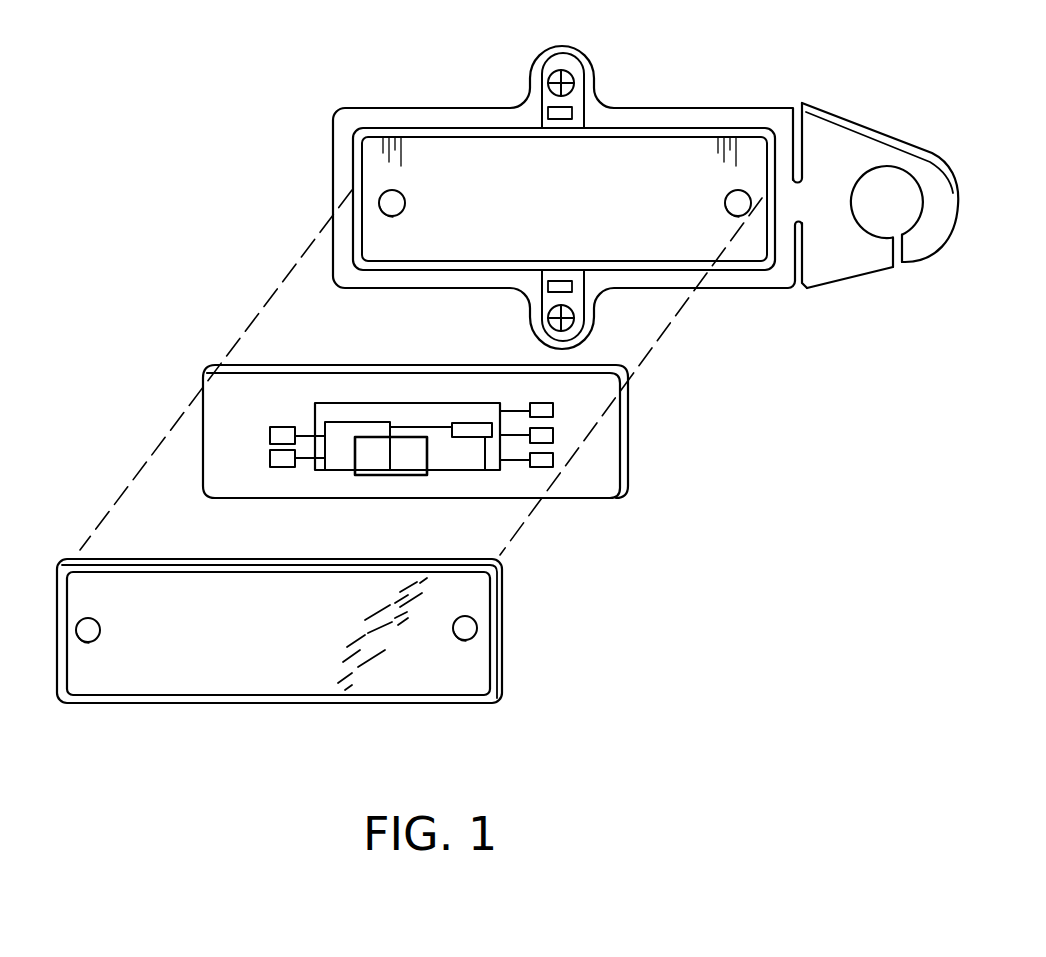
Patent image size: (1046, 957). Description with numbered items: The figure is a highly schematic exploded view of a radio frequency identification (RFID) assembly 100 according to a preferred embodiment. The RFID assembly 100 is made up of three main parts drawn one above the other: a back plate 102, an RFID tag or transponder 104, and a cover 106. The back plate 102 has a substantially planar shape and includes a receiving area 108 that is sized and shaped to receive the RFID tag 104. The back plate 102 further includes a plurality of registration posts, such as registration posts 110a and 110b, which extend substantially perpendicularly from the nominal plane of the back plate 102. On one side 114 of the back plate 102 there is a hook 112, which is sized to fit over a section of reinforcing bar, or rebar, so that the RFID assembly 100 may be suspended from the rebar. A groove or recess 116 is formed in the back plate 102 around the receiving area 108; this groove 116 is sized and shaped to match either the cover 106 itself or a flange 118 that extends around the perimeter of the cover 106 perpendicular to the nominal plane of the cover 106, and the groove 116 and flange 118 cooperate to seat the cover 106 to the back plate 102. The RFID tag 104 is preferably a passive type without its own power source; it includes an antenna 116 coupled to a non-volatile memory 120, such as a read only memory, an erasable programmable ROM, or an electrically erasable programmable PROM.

The RFID assembly 100 is at (240, 176).
The back plate 102 is at (708, 92).
The RFID tag 104 is at (628, 450).
The cover 106 is at (520, 639).
The receiving area 108 is at (740, 248).
The registration post 110a is at (550, 72).
The registration post 110b is at (550, 330).
The hook 112 is at (893, 135).
The side 114 is at (798, 202).
The groove or recess 116 is at (485, 135).
The flange 118 is at (227, 562).
The non-volatile memory 120 is at (378, 474).